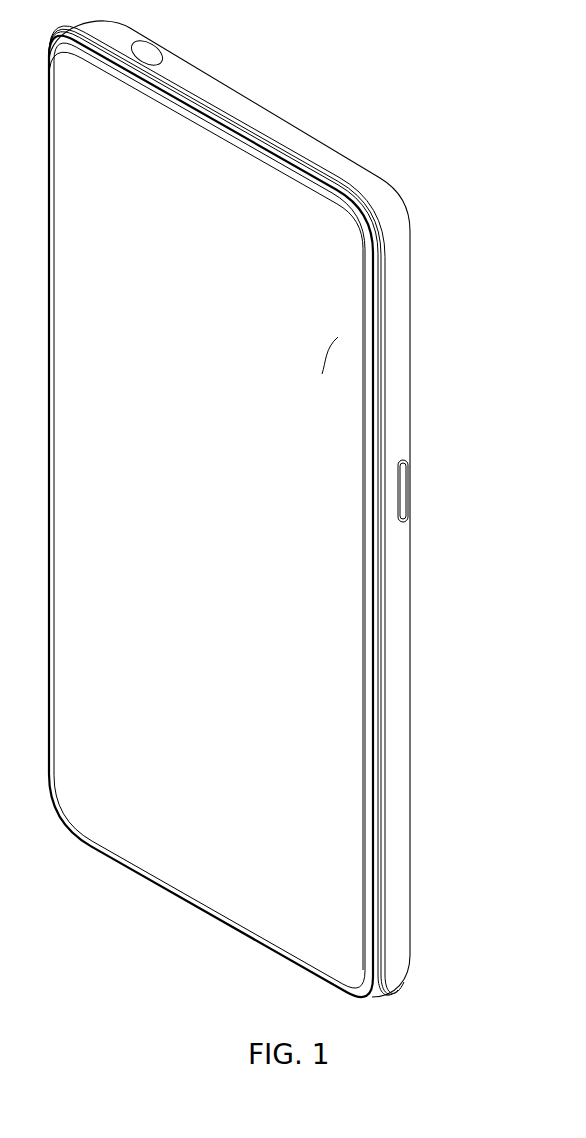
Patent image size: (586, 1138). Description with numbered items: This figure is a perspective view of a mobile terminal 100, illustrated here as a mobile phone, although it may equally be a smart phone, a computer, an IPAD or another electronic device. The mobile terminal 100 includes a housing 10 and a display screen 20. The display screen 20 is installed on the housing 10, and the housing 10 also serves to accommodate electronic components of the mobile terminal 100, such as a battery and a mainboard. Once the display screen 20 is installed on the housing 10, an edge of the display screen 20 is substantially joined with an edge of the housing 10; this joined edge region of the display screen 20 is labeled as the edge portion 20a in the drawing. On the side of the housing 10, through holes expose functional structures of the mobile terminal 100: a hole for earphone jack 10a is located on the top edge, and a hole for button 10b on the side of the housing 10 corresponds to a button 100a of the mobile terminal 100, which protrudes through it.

The mobile terminal 100 is at (357, 94).
The housing 10 is at (386, 185).
The hole for earphone jack 10a is at (168, 44).
The hole for button 10b is at (410, 462).
The button 100a is at (410, 512).
The display screen 20 is at (374, 418).
The edge portion of cover 20a is at (340, 360).